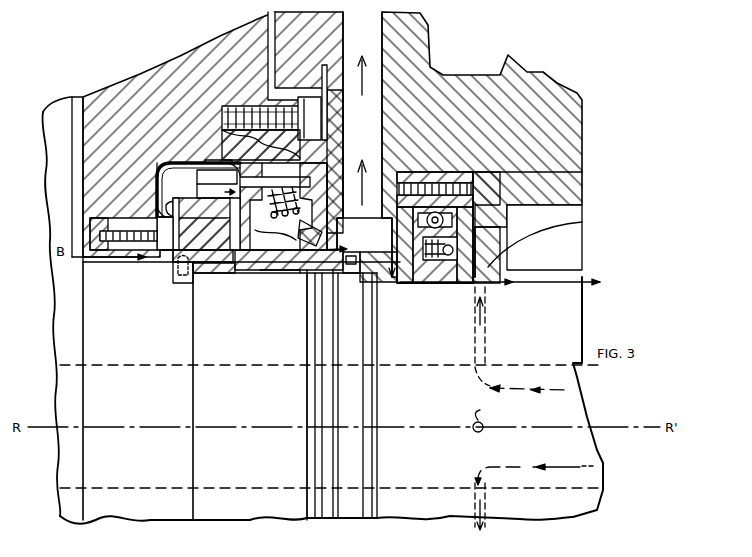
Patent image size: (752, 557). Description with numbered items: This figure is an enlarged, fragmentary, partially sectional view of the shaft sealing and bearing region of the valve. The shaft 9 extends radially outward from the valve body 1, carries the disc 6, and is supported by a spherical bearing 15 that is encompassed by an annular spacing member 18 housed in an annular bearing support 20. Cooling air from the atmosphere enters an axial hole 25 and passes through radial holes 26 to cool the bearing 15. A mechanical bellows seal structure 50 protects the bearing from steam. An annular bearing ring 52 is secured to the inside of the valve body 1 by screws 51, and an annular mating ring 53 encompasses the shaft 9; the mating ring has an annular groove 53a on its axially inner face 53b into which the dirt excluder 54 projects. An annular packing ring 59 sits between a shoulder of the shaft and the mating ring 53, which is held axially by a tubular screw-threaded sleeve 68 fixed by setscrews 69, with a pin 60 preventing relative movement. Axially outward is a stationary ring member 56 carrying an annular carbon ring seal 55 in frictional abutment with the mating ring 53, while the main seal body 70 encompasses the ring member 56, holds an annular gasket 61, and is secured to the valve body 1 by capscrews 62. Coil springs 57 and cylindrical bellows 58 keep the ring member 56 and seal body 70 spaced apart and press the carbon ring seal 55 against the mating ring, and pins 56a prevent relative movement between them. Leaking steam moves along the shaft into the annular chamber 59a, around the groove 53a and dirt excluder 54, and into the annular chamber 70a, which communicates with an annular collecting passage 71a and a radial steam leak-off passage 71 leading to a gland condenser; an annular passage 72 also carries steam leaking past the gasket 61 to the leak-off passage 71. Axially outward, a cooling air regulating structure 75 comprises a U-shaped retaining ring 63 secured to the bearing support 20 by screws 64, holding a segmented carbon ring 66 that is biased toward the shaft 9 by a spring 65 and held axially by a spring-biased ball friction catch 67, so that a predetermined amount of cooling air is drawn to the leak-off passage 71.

The valve body 1 is at (101, 96).
The disc 6 is at (56, 302).
The shaft 9 is at (274, 508).
The spherical bearing 15 is at (576, 262).
The annular spacing member 18 is at (560, 186).
The annular bearing support 20 is at (518, 72).
The axial hole 25 is at (598, 468).
The radial holes 26 is at (486, 325).
The mechanical bellows seal structure 50 is at (256, 108).
The screws 51 is at (90, 232).
The annular bearing ring 52 is at (100, 217).
The annular mating ring 53 is at (170, 264).
The annular groove 53a is at (197, 200).
The axially inner face 53b is at (166, 256).
The dirt excluder 54 is at (162, 178).
The annular carbon ring seal 55 is at (191, 206).
The stationary ring member 56 is at (217, 184).
The pins 56a is at (208, 162).
The coil springs 57 is at (282, 186).
The cylindrical bellows 58 is at (258, 260).
The annular packing ring 59 is at (206, 224).
The annular chamber 59a is at (160, 226).
The pin 60 is at (180, 278).
The annular gasket 61 is at (258, 160).
The capscrews 62 is at (321, 90).
The U-shaped retaining ring 63 is at (420, 172).
The screws 64 is at (476, 190).
The spring 65 is at (472, 214).
The segmented carbon ring 66 is at (430, 283).
The spring-biased ball friction catch 67 is at (458, 258).
The tubular screw-threaded sleeve 68 is at (250, 275).
The setscrews 69 is at (352, 275).
The main seal body 70 is at (228, 160).
The annular chamber 70a is at (285, 271).
The steam leak-off passage 71 is at (372, 66).
The annular collecting passage 71a is at (388, 250).
The annular passage 72 is at (324, 72).
The cooling air regulating structure 75 is at (432, 172).